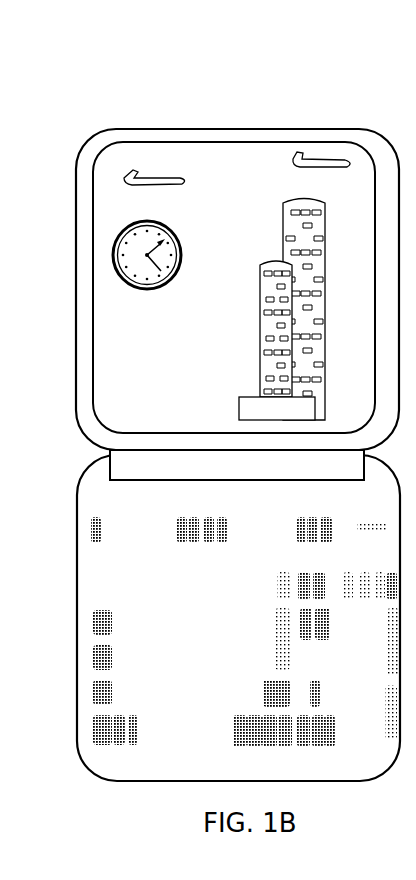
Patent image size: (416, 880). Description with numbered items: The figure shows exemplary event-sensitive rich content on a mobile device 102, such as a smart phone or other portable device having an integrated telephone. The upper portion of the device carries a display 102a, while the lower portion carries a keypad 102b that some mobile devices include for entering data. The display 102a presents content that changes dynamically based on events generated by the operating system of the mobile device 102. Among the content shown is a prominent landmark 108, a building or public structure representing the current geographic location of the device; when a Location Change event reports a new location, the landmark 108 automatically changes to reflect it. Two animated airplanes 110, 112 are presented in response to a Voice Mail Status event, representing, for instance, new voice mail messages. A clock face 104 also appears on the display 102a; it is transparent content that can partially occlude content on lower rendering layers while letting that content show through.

The mobile device 102 is at (204, 417).
The display 102a is at (203, 265).
The keypad 102b is at (260, 772).
The clock face 104 is at (112, 272).
The landmark 108 is at (260, 377).
The animated airplane 110 is at (122, 179).
The animated airplane 112 is at (327, 158).